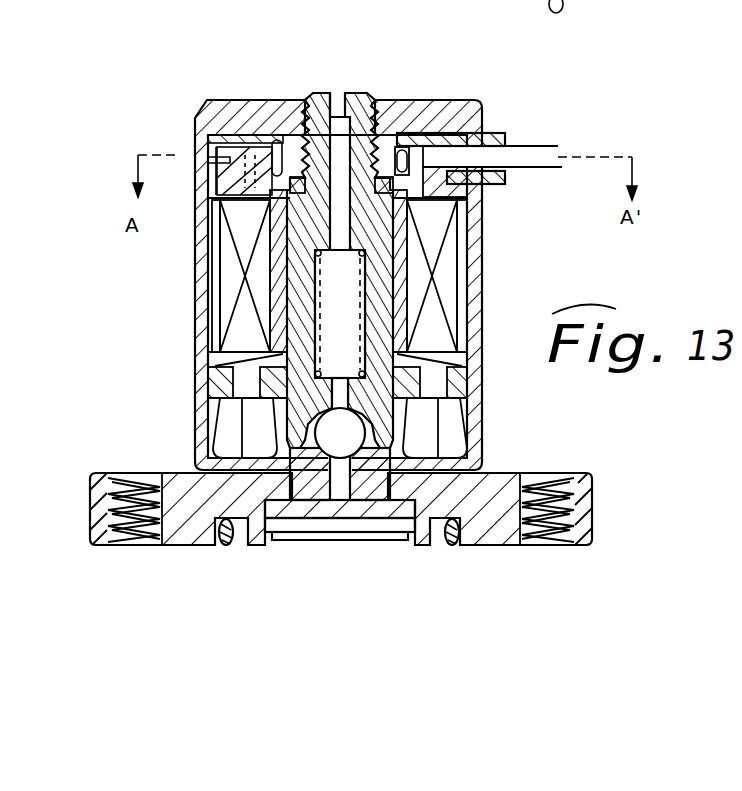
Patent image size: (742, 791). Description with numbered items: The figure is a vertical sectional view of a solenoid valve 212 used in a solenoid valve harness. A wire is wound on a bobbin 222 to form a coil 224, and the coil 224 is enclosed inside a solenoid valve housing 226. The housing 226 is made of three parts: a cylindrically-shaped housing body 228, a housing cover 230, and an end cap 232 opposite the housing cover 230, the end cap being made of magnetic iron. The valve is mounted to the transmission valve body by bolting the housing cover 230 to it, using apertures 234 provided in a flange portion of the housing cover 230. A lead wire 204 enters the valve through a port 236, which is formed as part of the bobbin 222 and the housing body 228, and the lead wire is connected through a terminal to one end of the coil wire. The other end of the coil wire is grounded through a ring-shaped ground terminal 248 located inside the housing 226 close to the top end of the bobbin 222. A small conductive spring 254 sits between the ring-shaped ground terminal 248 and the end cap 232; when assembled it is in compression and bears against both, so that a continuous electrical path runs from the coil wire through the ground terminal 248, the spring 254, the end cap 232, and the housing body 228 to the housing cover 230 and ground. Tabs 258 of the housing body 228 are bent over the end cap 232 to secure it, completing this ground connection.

The lead wire 204 is at (552, 146).
The solenoid valve 212 is at (229, 78).
The bobbin 222 is at (396, 268).
The coil 224 is at (452, 295).
The solenoid valve housing 226 is at (185, 352).
The housing body 228 is at (197, 258).
The housing cover 230 is at (162, 470).
The end cap 232 is at (464, 100).
The apertures 234 is at (134, 550).
The port 236 is at (504, 133).
The ring-shaped ground terminal 248 is at (349, 90).
The spring 254 is at (303, 100).
The tabs 258 is at (205, 108).